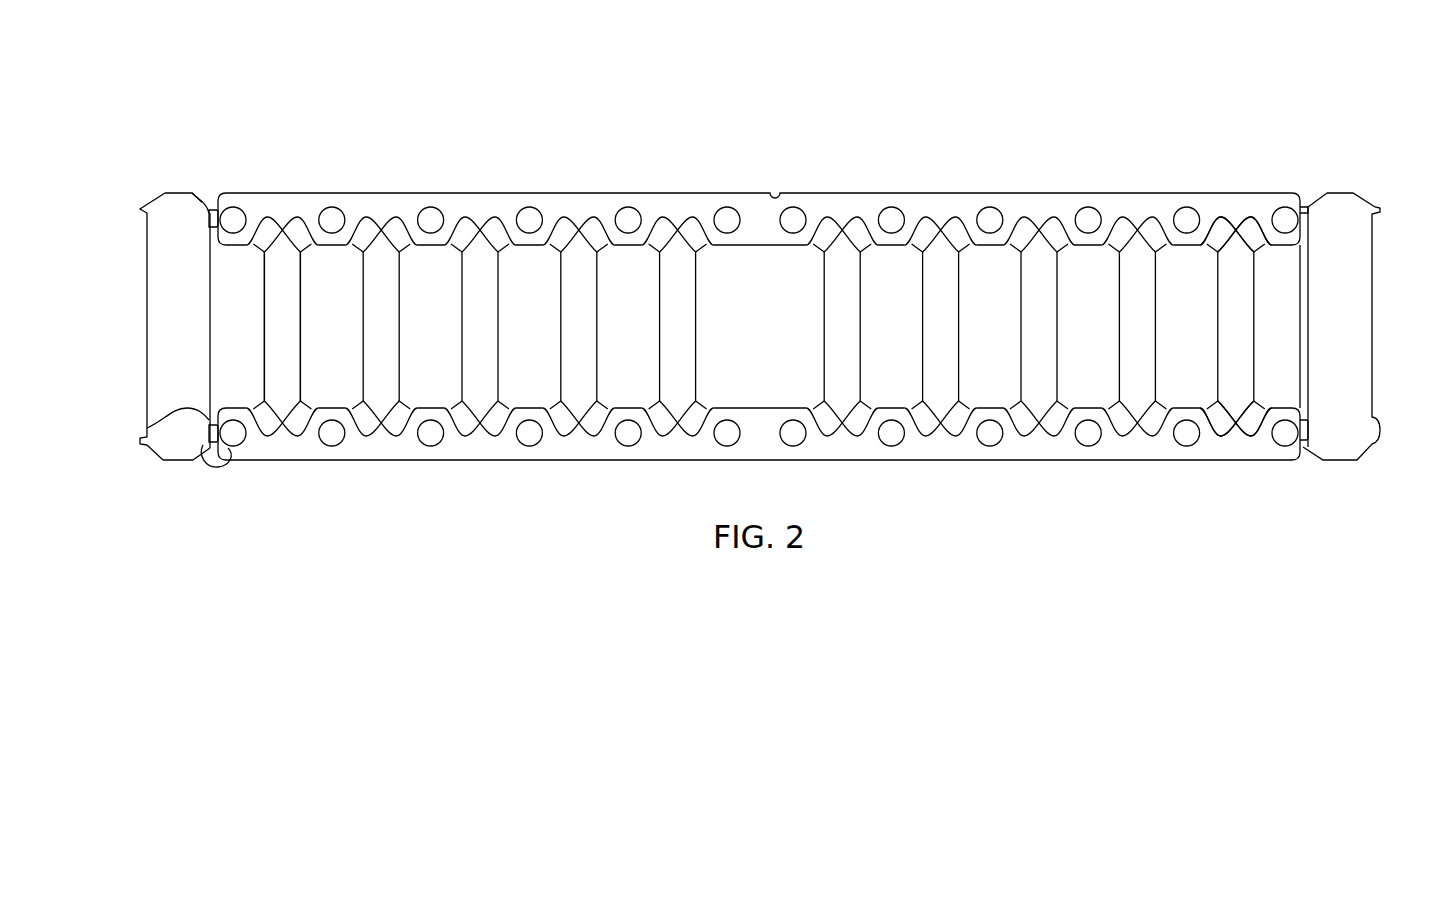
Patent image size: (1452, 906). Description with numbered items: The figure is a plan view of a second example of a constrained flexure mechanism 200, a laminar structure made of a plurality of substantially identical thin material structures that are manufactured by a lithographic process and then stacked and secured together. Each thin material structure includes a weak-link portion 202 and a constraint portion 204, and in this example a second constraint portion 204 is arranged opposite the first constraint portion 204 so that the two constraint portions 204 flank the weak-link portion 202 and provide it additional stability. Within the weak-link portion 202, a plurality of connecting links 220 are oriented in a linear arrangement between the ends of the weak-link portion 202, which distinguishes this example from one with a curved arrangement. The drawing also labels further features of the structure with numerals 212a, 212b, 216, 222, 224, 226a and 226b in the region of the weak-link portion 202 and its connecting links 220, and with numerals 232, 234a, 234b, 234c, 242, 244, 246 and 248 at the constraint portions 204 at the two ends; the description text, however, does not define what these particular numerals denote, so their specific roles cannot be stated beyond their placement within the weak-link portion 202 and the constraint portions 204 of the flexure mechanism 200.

The flexure mechanism 200 is at (1195, 88).
The weak-link portion 202 is at (1195, 136).
The constraint portion 204 is at (116, 177).
The upper rail 212a is at (708, 212).
The lower rail 212b is at (720, 450).
The rail-strut junction 216 is at (297, 206).
The connecting link 220 is at (1283, 297).
The hole 222 is at (1258, 230).
The strut 224 is at (1218, 365).
The upper strut joint 226a is at (1252, 230).
The lower strut joint 226b is at (1232, 426).
The end connector body 232 is at (157, 297).
The upper connecting lobe 234a is at (204, 200).
The lower connecting arch 234b is at (147, 428).
The lower connecting lobe 234c is at (206, 452).
The upper left chamfer 242 is at (165, 193).
The upper right chamfer 244 is at (229, 194).
The lower left chamfer 246 is at (163, 462).
The lower right chamfer 248 is at (248, 460).